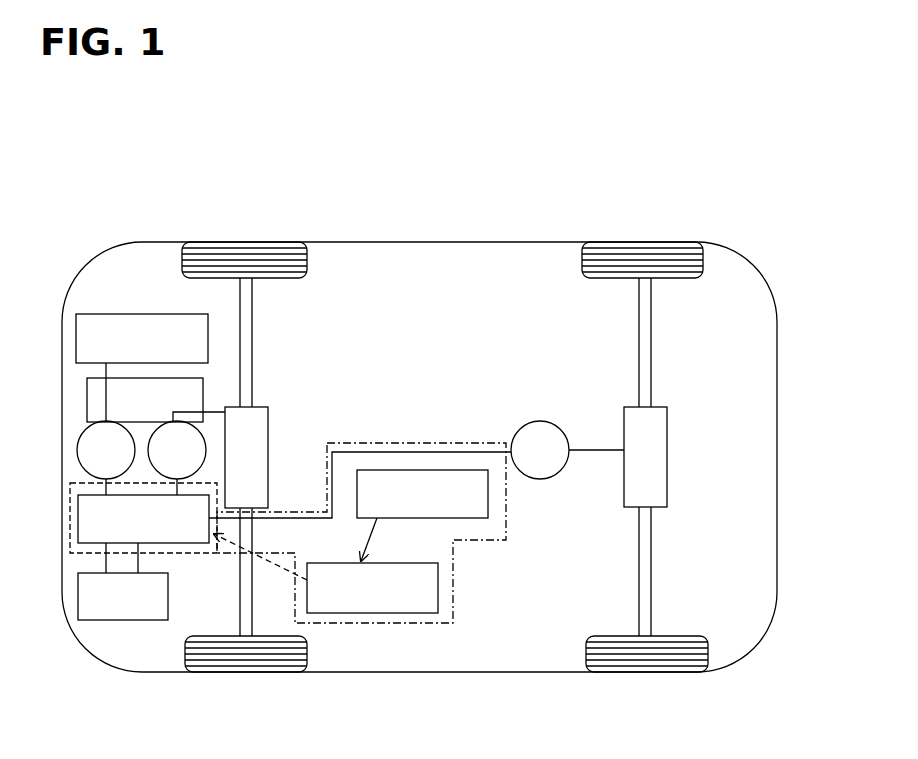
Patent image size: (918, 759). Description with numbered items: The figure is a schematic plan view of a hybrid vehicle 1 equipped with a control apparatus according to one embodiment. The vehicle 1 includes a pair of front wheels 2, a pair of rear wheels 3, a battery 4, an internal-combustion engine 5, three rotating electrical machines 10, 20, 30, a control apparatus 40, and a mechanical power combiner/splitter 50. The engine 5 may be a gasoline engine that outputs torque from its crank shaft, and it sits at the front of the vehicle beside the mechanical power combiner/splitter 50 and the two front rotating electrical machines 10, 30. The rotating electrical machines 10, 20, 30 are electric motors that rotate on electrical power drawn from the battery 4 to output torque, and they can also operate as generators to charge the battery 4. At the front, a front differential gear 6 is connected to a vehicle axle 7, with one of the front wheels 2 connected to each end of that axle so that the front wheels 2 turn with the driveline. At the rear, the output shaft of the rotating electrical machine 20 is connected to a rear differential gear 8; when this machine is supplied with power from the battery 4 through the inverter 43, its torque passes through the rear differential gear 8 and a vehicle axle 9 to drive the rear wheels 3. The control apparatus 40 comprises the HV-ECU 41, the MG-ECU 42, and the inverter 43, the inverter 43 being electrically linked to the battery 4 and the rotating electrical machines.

The vehicle 1 is at (468, 125).
The front wheels 2 is at (239, 242).
The rear wheels 3 is at (642, 243).
The battery 4 is at (138, 622).
The internal-combustion engine 5 is at (137, 314).
The front differential gear 6 is at (268, 422).
The vehicle axle 7 is at (252, 328).
The rear differential gear 8 is at (667, 423).
The vehicle axle 9 is at (651, 328).
The rotating electrical machine 10 is at (206, 451).
The rotating electrical machine 20 is at (540, 421).
The rotating electrical machine 30 is at (77, 451).
The control apparatus 40 is at (403, 443).
The HV-ECU 41 is at (488, 498).
The MG-ECU 42 is at (438, 588).
The inverter 43 is at (72, 523).
The mechanical power combiner/splitter 50 is at (87, 402).